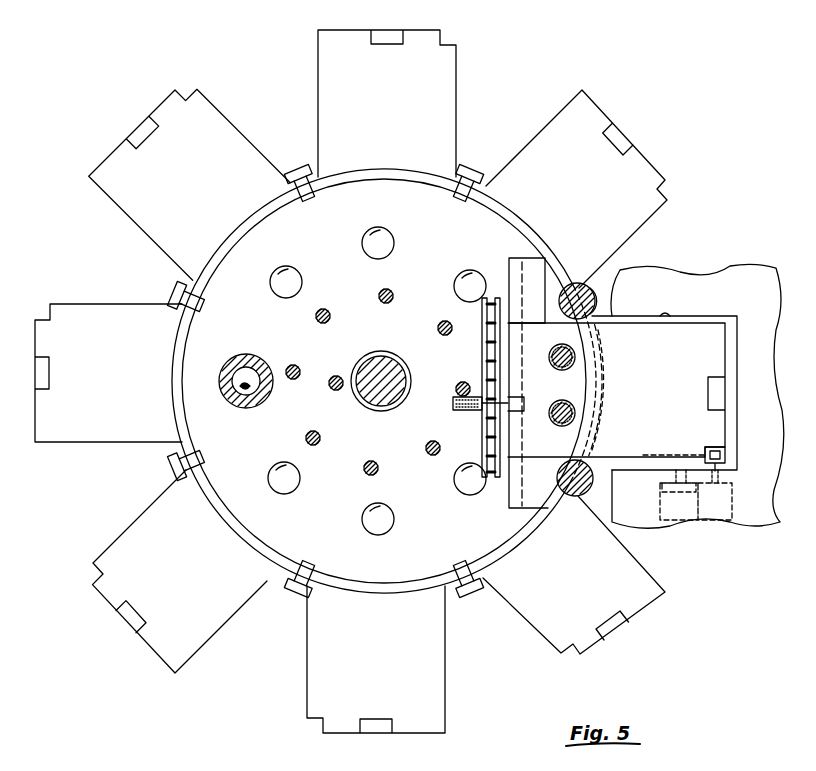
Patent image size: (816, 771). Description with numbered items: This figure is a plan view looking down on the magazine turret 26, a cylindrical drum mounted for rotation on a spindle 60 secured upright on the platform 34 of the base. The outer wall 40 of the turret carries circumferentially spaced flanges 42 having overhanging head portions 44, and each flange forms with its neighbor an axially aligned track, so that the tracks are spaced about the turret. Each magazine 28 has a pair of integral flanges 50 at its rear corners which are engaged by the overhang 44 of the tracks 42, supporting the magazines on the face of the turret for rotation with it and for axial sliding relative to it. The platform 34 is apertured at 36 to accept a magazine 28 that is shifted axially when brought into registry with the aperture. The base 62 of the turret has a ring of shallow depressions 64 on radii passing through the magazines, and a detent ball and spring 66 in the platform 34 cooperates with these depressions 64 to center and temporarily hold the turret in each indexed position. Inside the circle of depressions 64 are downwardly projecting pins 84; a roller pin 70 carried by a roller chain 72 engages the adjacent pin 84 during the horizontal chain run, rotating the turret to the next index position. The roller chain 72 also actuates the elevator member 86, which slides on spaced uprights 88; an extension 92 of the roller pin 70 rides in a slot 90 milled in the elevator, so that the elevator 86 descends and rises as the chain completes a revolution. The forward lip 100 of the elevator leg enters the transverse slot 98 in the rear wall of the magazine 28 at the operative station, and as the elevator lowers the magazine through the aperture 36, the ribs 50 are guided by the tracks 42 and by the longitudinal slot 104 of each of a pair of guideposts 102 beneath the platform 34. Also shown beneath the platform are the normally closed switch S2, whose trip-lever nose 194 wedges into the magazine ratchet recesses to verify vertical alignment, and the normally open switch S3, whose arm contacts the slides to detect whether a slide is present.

The turret 26 is at (169, 284).
The magazine 28 is at (458, 85).
The upper surface (platform) of base 34 is at (726, 260).
The aperture 36 is at (665, 314).
The outer wall 40 is at (226, 247).
The flanges (tracks) 42 is at (304, 186).
The overhanging head portions 44 is at (298, 170).
The integral flanges (longitudinal ribs) 50 is at (602, 306).
The spindle 60 is at (388, 352).
The base of the turret 62 is at (438, 256).
The depressions (detents) 64 is at (270, 284).
The detent ball and spring 66 is at (262, 366).
The roller pin 70 is at (455, 405).
The roller chain 72 is at (482, 366).
The pins 84 is at (385, 303).
The elevator member 86 is at (588, 378).
The uprights 88 is at (556, 348).
The slot (milled groove) 90 is at (516, 262).
The extension of roller pin 92 is at (530, 404).
The transverse slot 98 is at (598, 390).
The forward lip 100 is at (594, 408).
The guideposts 102 is at (596, 290).
The longitudinal slot 104 is at (578, 290).
The nose of the trip lever 194 is at (678, 458).
The single-pole normally closed switch S2 is at (682, 520).
The single-pole normally open switch S3 is at (720, 522).